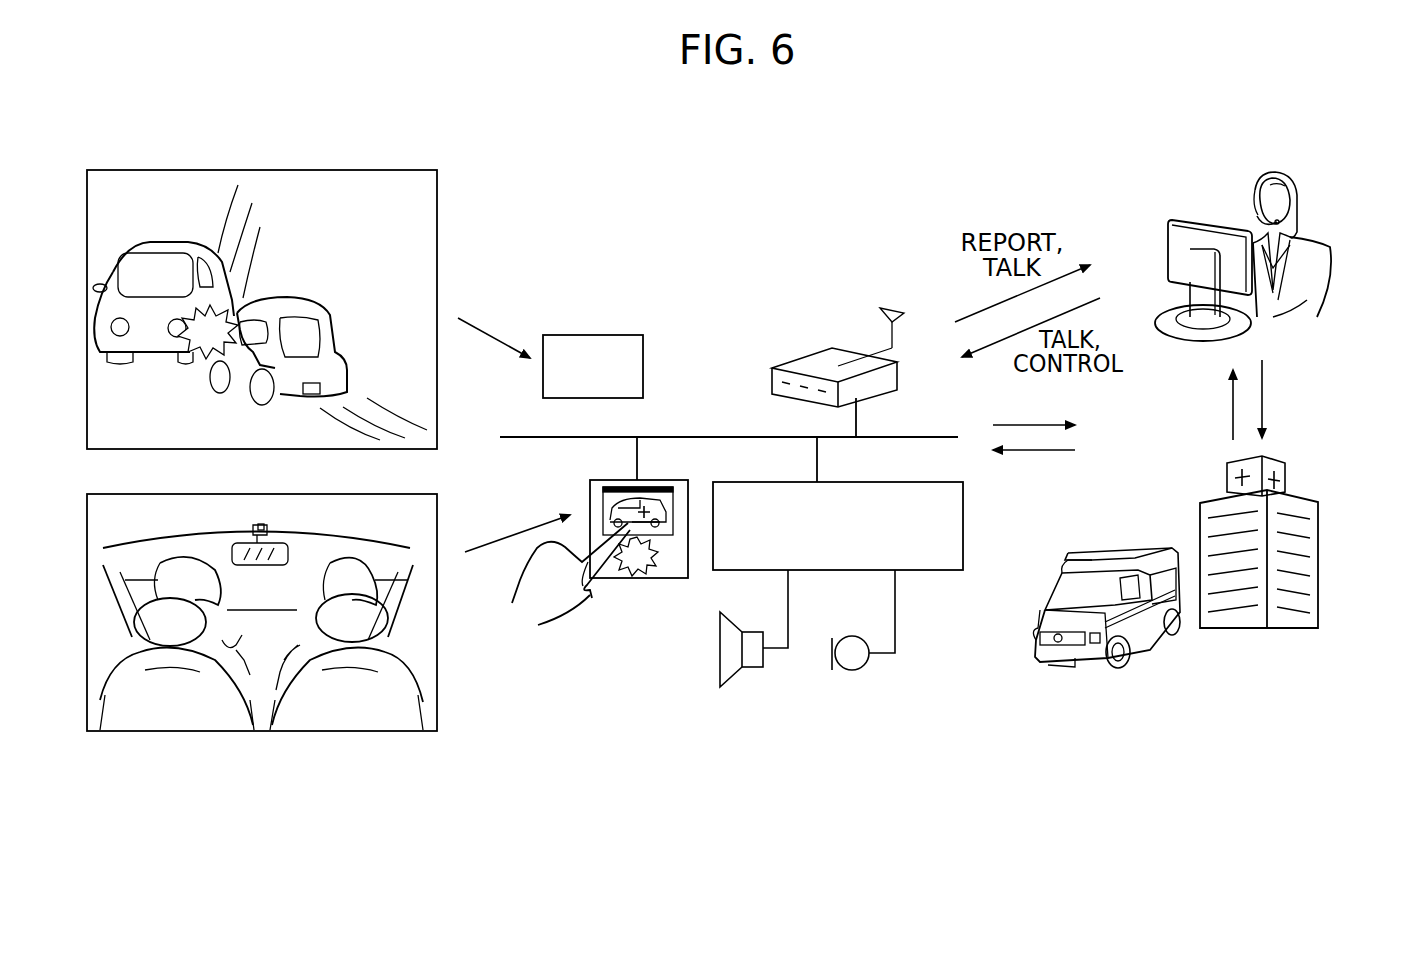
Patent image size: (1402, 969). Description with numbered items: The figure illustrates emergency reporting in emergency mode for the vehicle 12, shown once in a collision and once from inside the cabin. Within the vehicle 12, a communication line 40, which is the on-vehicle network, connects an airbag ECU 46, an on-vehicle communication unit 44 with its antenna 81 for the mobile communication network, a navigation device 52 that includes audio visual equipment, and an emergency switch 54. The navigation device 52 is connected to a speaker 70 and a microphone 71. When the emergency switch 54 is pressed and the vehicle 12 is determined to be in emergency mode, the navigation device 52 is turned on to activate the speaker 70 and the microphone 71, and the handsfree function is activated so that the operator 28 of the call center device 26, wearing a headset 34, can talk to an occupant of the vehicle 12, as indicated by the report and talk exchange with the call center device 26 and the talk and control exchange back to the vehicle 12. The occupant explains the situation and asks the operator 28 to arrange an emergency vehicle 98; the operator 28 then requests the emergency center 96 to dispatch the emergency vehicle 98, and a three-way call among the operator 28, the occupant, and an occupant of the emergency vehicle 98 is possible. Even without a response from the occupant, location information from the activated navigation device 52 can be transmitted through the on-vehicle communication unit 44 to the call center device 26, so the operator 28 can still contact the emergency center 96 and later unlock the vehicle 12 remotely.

The vehicle 12 is at (694, 279).
The call center device 26 is at (1185, 246).
The operator 28 is at (1278, 176).
The headset 34 is at (1257, 216).
The communication line (on-vehicle network) 40 is at (710, 436).
The on-vehicle communication unit 44 is at (840, 360).
The airbag ECU 46 is at (592, 335).
The navigation device 52 is at (892, 478).
The emergency switch 54 is at (664, 478).
The speaker (sound generator) 70 is at (753, 662).
The microphone 71 is at (850, 670).
The antenna 81 is at (895, 306).
The emergency center 96 is at (1305, 525).
The emergency vehicle 98 is at (1143, 548).